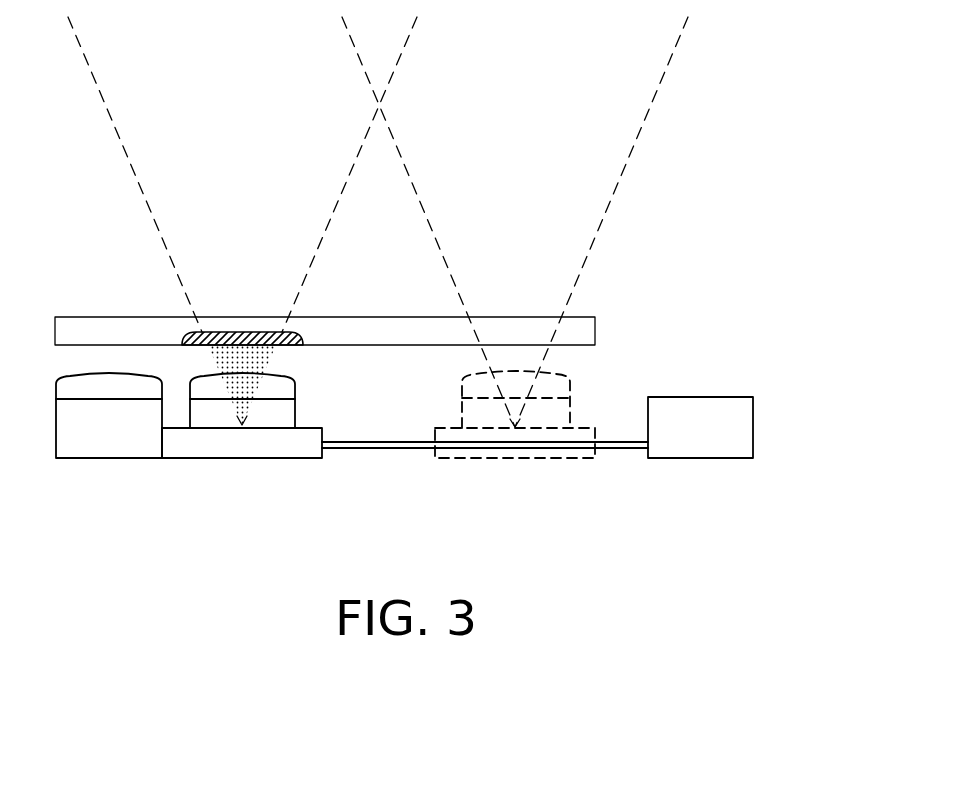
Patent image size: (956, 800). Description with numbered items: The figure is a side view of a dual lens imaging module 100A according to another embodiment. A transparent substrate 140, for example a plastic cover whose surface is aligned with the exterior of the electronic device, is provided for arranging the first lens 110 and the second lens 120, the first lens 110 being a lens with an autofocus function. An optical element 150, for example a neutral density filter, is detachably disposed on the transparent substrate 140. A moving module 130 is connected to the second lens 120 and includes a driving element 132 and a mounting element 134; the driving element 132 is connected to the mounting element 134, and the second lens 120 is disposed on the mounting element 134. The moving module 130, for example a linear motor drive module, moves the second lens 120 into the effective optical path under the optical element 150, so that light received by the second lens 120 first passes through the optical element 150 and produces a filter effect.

The dual lens imaging module 100A is at (435, 275).
The first lens 110 is at (105, 445).
The second lens 120 is at (213, 418).
The moving module 130 is at (702, 377).
The driving element 132 is at (702, 445).
The mounting element 134 is at (295, 445).
The transparent substrate 140 is at (585, 332).
The optical element 150 is at (220, 332).